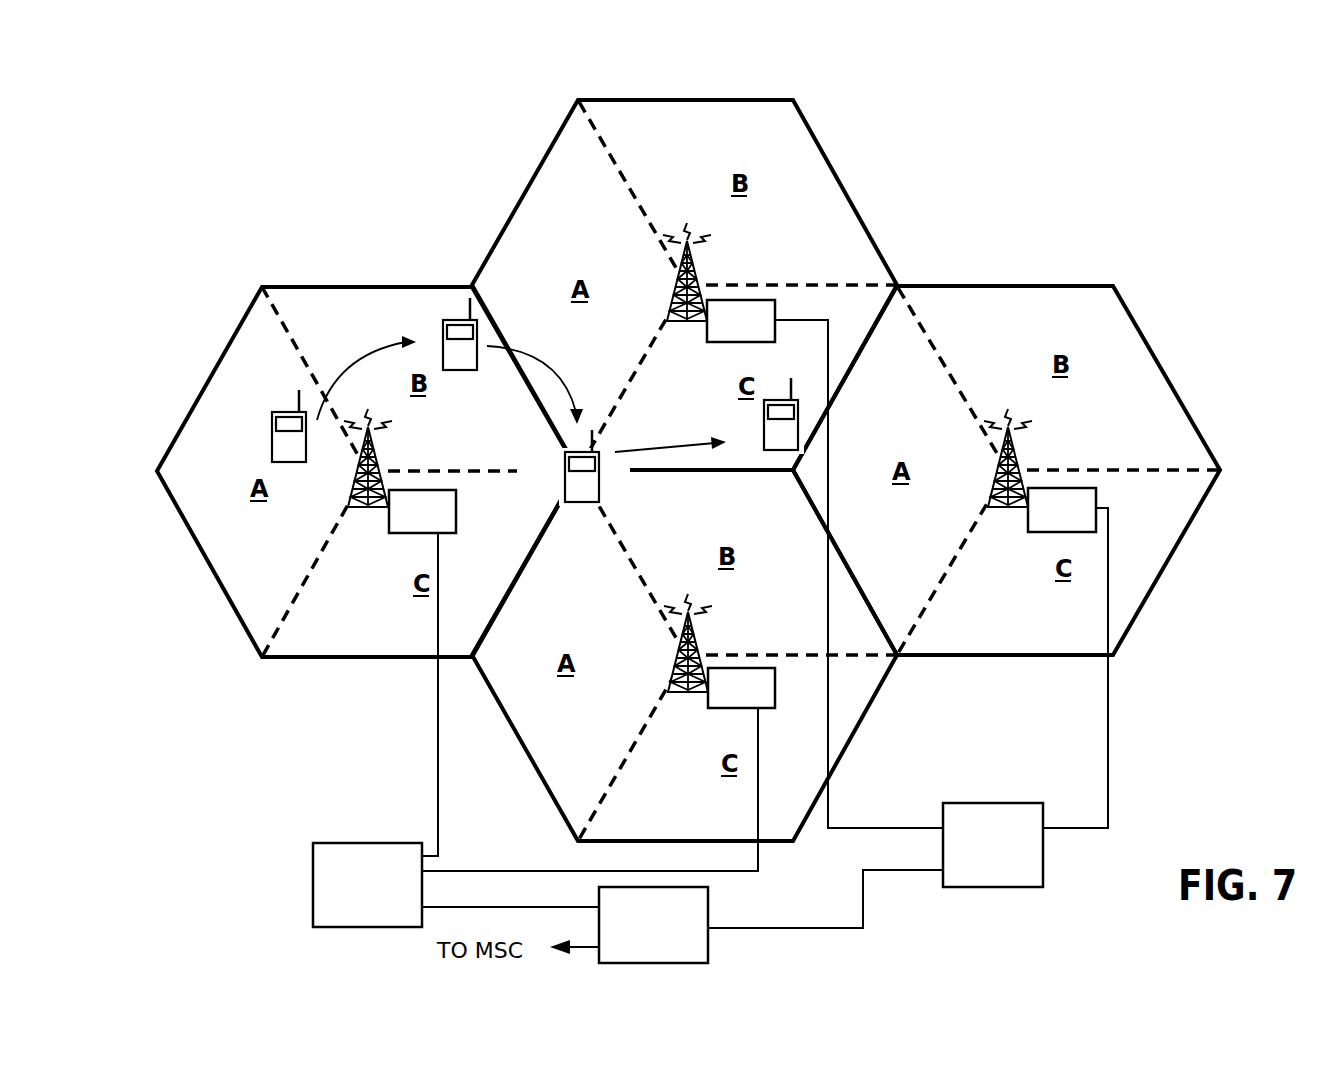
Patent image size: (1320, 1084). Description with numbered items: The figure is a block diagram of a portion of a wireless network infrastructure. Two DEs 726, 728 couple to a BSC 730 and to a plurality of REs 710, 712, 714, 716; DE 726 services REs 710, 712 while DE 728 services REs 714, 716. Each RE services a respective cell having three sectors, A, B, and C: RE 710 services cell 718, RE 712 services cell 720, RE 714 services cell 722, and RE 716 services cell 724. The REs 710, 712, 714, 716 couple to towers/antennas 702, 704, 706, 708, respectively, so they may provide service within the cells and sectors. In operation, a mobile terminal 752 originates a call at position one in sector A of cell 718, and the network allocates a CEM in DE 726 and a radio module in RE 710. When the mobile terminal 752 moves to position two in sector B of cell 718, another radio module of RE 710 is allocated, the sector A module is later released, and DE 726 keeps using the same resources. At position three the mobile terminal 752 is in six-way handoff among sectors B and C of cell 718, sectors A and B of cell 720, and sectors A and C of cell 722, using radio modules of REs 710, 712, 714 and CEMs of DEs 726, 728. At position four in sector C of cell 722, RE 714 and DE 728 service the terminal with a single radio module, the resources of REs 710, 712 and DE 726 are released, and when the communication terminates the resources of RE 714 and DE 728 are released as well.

The tower/antenna 702 is at (350, 500).
The tower/antenna 704 is at (670, 689).
The tower/antenna 706 is at (668, 315).
The tower/antenna 708 is at (990, 503).
The RE 710 is at (394, 535).
The RE 712 is at (716, 712).
The RE 714 is at (718, 345).
The RE 716 is at (1042, 534).
The cell 718 is at (340, 287).
The cell 720 is at (872, 707).
The cell 722 is at (828, 162).
The cell 724 is at (1007, 286).
The DE 726 is at (347, 843).
The DE 728 is at (992, 803).
The BSC 730 is at (710, 907).
The mobile terminal 752 is at (762, 432).